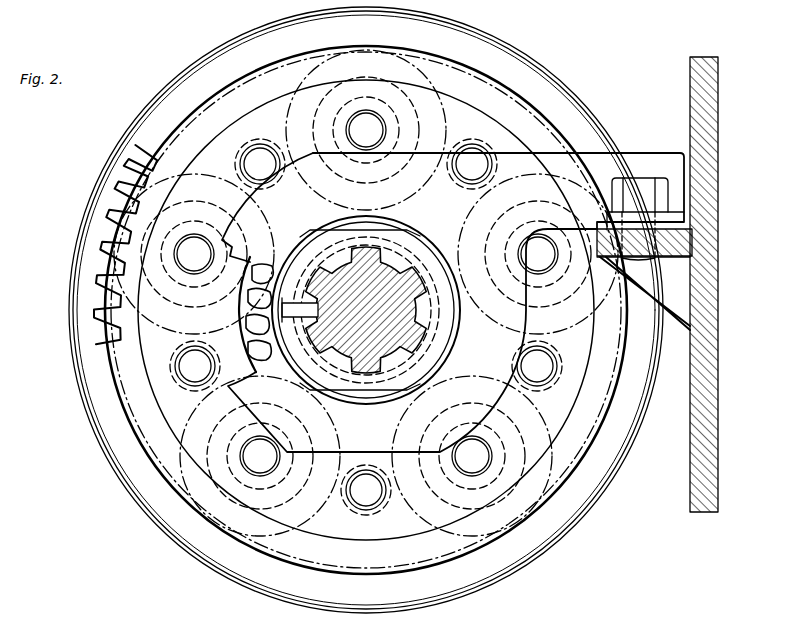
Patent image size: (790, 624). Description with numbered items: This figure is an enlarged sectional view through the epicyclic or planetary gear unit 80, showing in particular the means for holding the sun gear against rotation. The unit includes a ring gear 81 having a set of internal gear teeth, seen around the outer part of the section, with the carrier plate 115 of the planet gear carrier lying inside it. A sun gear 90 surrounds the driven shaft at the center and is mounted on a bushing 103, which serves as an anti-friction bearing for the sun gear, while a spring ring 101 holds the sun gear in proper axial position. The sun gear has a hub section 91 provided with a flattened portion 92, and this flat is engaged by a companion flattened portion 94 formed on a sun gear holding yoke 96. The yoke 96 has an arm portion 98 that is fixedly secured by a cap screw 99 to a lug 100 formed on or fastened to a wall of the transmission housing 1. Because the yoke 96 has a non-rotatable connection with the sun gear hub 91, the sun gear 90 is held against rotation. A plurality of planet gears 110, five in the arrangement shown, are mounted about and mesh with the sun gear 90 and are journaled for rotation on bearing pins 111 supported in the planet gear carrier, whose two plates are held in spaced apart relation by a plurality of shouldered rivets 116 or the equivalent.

The transmission housing 1 is at (722, 268).
The epicyclic gear unit 80 is at (90, 425).
The ring gear 81 is at (186, 80).
The sun gear 90 is at (264, 356).
The hub section 91 is at (310, 258).
The flattened portion 92 is at (331, 228).
The companion flattened portion 94 is at (414, 231).
The sun gear holding yoke 96 is at (476, 160).
The arm portion 98 is at (655, 152).
The cap screw 99 is at (641, 178).
The lug 100 is at (594, 246).
The spring ring 101 is at (366, 228).
The bushing 103 is at (304, 320).
The planet gears 110 is at (418, 74).
The bearing pins 111 is at (192, 262).
The carrier plate 115 is at (158, 156).
The shouldered rivets 116 is at (261, 162).